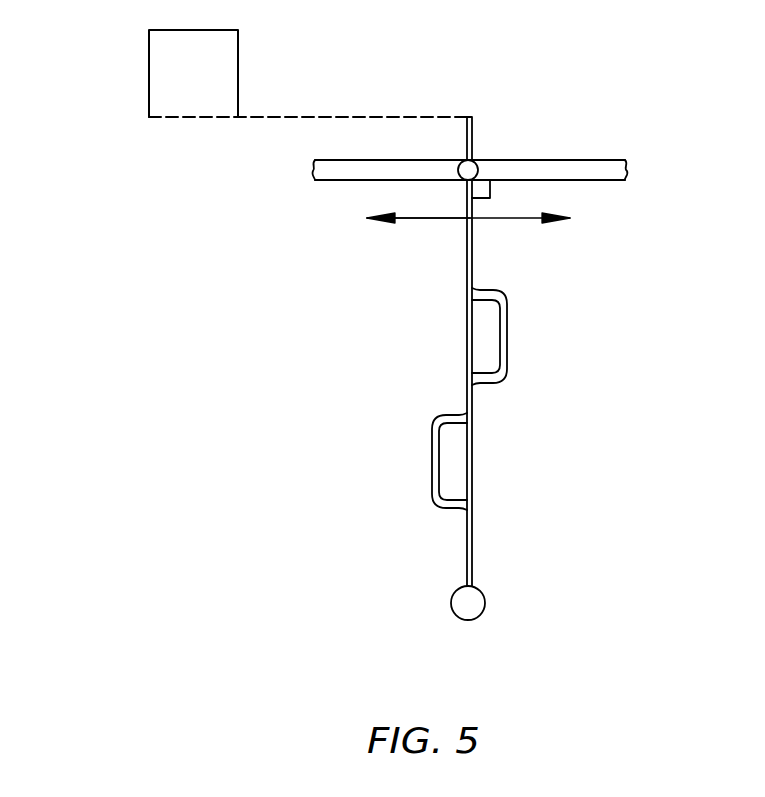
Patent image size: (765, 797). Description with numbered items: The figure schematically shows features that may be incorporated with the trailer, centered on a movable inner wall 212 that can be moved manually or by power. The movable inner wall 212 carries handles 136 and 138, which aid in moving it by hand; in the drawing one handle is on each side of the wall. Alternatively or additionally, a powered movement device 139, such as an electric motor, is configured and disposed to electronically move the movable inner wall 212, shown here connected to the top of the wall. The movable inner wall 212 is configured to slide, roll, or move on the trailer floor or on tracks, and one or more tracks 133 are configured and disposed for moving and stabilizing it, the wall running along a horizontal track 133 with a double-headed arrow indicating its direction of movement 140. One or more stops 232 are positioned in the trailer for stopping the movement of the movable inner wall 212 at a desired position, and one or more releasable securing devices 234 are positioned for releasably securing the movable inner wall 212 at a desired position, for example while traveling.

The track 133 is at (612, 160).
The handle 136 is at (500, 333).
The handle 138 is at (435, 460).
The powered movement device 139 is at (149, 72).
The direction of motion 140 is at (518, 220).
The movable inner wall 212 is at (468, 543).
The stop 232 is at (490, 190).
The releasable securing device 234 is at (425, 220).